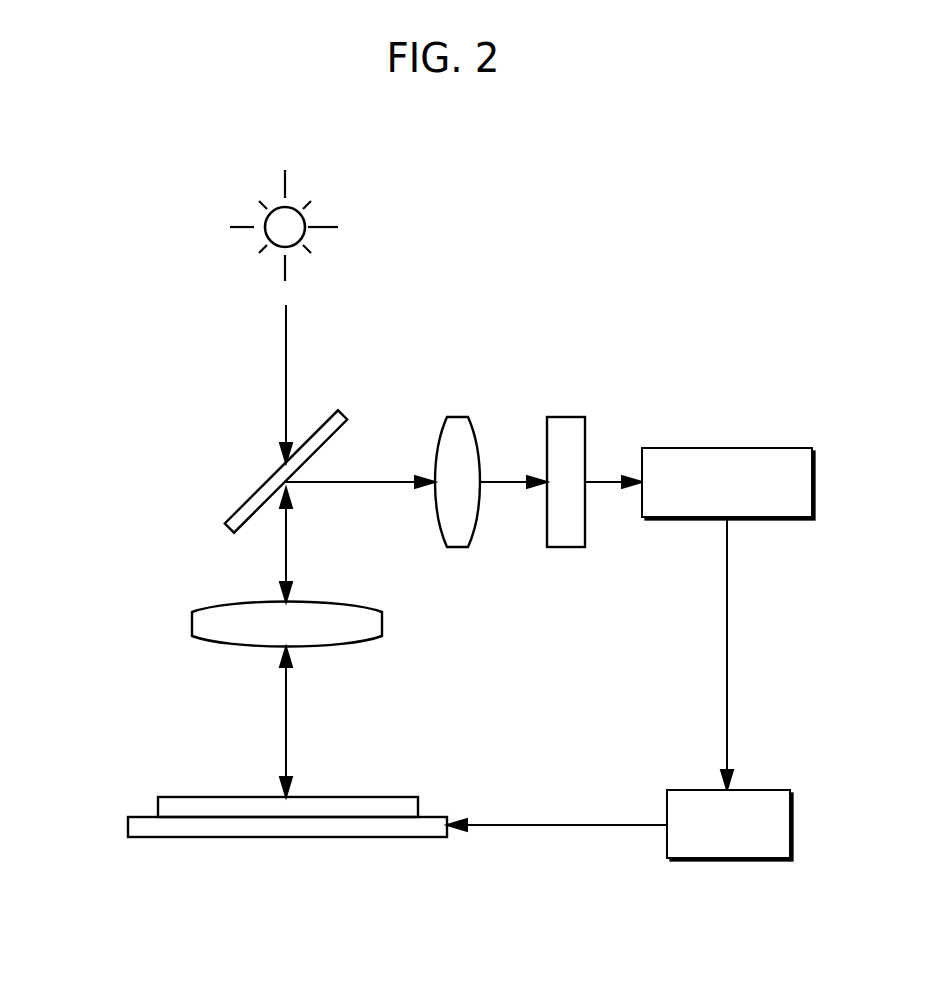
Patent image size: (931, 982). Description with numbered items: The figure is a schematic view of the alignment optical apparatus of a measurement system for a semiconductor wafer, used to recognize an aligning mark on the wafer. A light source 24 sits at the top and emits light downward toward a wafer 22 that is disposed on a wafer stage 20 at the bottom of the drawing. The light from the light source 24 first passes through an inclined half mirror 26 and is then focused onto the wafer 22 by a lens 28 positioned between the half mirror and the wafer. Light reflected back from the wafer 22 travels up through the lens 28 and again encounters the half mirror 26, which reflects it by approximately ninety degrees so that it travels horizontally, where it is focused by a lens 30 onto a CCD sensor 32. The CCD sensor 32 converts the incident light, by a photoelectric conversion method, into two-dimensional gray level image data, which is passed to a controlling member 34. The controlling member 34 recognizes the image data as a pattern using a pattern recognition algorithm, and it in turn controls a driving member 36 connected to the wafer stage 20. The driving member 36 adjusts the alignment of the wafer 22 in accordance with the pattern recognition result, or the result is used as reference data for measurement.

The wafer stage 20 is at (132, 827).
The wafer 22 is at (160, 806).
The light source 24 is at (308, 213).
The half mirror 26 is at (347, 412).
The lens 28 is at (192, 620).
The lens 30 is at (458, 415).
The CCD sensor 32 is at (567, 415).
The controlling member 34 is at (763, 447).
The driving member 36 is at (770, 788).